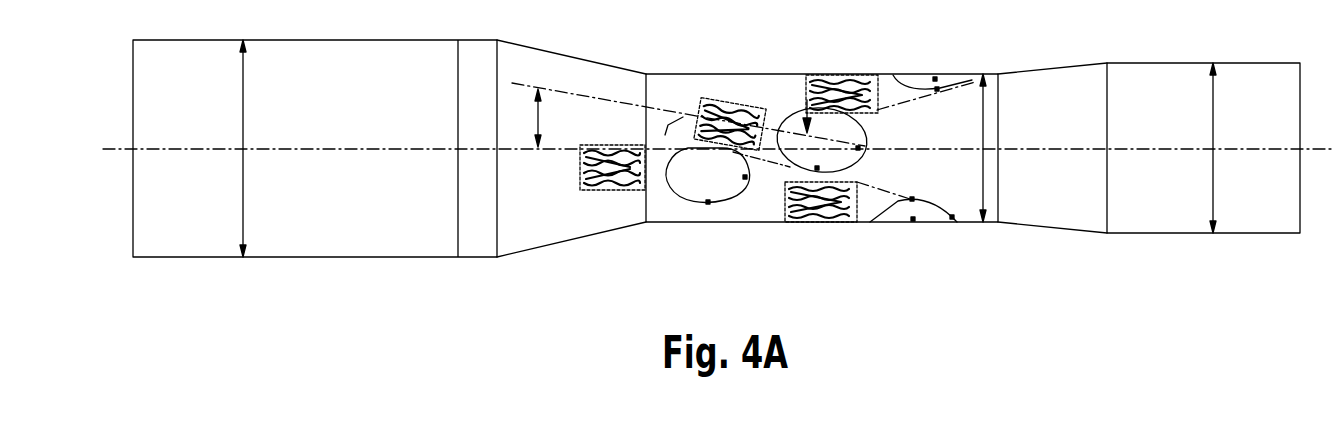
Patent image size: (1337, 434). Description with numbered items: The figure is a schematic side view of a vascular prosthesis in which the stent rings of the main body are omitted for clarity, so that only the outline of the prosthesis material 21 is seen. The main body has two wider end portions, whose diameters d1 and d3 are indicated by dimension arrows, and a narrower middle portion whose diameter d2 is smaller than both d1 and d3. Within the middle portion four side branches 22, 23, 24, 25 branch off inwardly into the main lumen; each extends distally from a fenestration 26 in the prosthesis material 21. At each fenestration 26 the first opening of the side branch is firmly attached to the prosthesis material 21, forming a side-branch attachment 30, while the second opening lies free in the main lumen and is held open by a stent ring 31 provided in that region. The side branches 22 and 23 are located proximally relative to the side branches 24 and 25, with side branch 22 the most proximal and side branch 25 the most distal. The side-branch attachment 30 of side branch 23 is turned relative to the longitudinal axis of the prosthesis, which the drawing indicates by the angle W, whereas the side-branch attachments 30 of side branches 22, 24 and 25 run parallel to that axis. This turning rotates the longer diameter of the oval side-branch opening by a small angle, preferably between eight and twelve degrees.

The prosthesis material 21 is at (1063, 97).
The side branch 22 is at (655, 186).
The side branch 23 is at (750, 110).
The side branch 24 is at (845, 206).
The side branch 25 is at (868, 77).
The fenestration 26 is at (680, 145).
The side-branch attachment 30 is at (695, 207).
The stent ring 31 is at (597, 191).
The angle W is at (540, 120).
The diameter d1 is at (247, 148).
The diameter d2 is at (987, 148).
The diameter d3 is at (1217, 148).